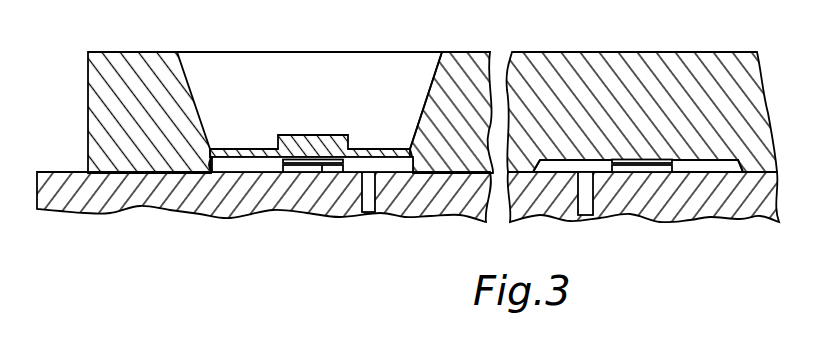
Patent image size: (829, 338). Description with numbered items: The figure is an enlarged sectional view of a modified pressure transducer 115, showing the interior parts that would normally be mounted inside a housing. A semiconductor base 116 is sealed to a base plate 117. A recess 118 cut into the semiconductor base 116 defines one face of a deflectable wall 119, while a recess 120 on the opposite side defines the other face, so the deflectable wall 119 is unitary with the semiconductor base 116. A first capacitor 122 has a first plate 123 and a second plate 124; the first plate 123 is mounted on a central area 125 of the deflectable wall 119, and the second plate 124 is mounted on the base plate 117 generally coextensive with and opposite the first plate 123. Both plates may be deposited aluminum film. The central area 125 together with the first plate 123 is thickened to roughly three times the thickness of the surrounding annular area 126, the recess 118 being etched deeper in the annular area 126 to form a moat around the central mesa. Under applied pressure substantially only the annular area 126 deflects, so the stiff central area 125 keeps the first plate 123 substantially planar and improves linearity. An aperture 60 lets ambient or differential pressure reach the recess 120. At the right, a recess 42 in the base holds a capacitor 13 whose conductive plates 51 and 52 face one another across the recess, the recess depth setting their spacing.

The pressure transducer 115 is at (348, 74).
The semiconductor base 116 is at (463, 63).
The base plate 117 is at (463, 224).
The recess 118 is at (422, 107).
The deflectable wall 119 is at (233, 149).
The recess 120 is at (212, 159).
The first capacitor 122 is at (299, 173).
The first plate 123 is at (318, 168).
The second plate 124 is at (333, 164).
The central area 125 is at (326, 140).
The annular area 126 is at (263, 151).
The conductive plate 51 is at (635, 160).
The conductive plate 52 is at (645, 173).
The capacitor 13 is at (660, 173).
The recess 42 is at (728, 182).
The aperture 60 is at (373, 213).